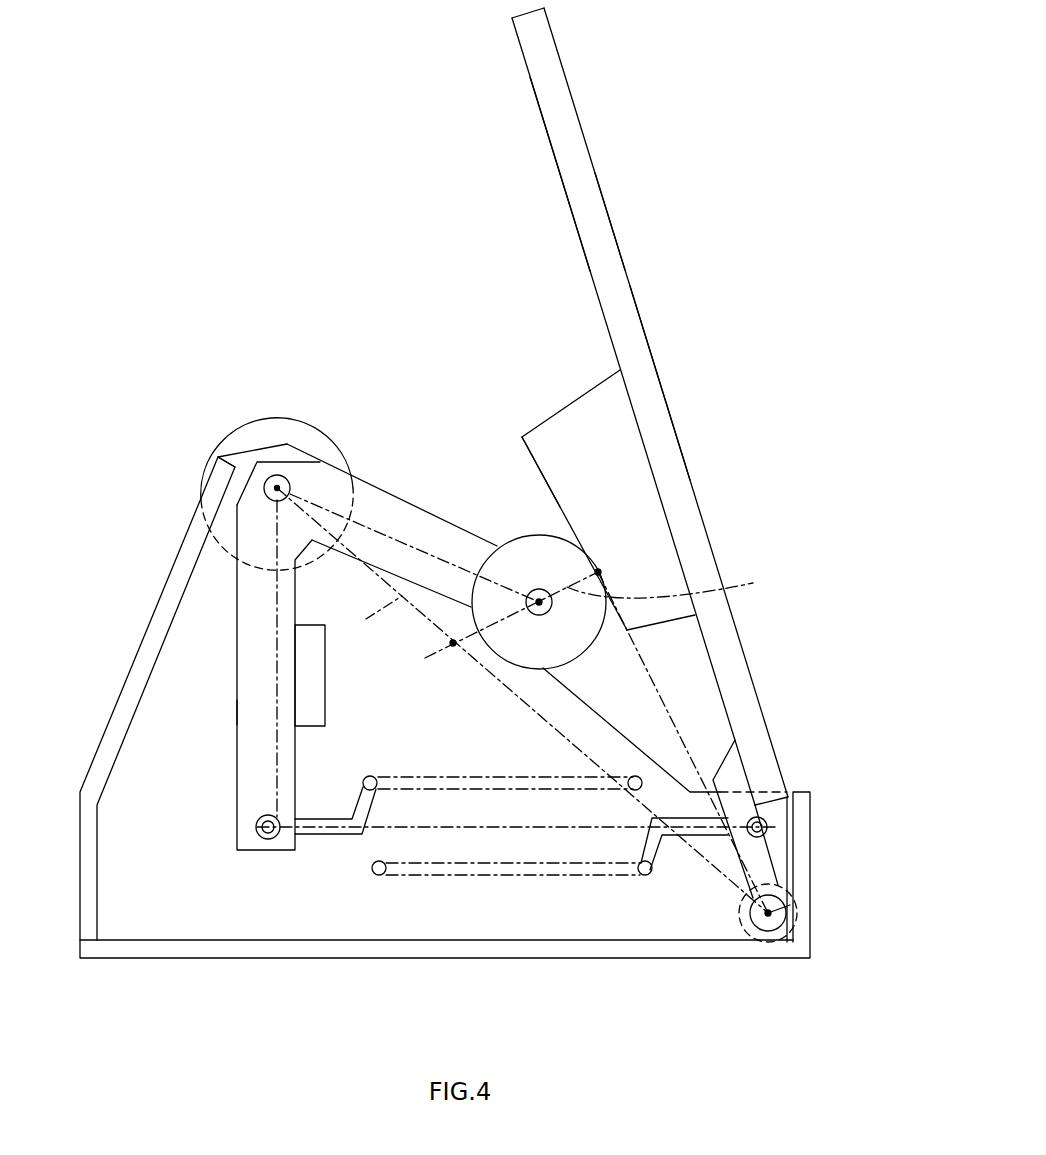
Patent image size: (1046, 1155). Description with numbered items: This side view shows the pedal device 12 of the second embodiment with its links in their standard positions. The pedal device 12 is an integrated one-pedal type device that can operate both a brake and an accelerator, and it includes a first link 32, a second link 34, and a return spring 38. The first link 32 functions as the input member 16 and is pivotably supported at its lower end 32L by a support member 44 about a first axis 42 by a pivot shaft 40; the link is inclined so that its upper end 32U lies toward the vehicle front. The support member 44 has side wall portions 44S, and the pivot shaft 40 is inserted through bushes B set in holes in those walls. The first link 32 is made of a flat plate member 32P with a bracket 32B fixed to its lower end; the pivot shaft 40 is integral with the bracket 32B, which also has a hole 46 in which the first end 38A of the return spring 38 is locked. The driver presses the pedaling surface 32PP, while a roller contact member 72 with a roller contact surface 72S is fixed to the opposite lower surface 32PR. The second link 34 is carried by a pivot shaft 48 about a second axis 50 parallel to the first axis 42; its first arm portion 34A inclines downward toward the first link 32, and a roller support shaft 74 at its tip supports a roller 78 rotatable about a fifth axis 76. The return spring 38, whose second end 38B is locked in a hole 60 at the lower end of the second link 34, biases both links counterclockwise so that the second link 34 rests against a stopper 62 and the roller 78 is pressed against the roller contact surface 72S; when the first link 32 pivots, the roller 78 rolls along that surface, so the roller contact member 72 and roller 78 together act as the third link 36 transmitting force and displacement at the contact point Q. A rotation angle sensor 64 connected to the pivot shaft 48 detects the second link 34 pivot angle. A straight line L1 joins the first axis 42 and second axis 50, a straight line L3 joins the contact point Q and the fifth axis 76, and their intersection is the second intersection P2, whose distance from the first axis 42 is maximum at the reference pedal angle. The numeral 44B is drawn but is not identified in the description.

The pedal device 12 is at (256, 128).
The input member 16 is at (688, 385).
The first link 32 is at (620, 117).
The other end of first link 32U is at (542, 40).
The one end of first link 32L is at (763, 745).
The plate member 32P is at (548, 105).
The lower surface 32PR is at (571, 206).
The pedaling surface 32PP is at (607, 199).
The bracket 32B is at (778, 857).
The second link 34 is at (231, 597).
The first arm portion 34A is at (436, 512).
The third link 36 is at (592, 532).
The return spring 38 is at (379, 876).
The first end of return spring 38A is at (753, 834).
The second end of return spring 38B is at (266, 840).
The pivot shaft 40 is at (762, 926).
The first axis 42 is at (776, 928).
The support member 44 is at (118, 712).
The frame bottom portion 44B is at (245, 712).
The side wall portion 44S is at (185, 935).
The hole 46 is at (768, 818).
The pivot shaft 48 is at (213, 463).
The second axis 50 is at (279, 477).
The hole 60 is at (257, 818).
The stopper 62 is at (328, 698).
The rotation angle sensor 64 is at (242, 418).
The roller contact member 72 is at (578, 398).
The roller contact surface 72S is at (522, 437).
The roller support shaft 74 is at (537, 588).
The fifth axis 76 is at (548, 608).
The roller 78 is at (515, 653).
The bush B is at (798, 912).
The contact point Q is at (598, 572).
The second intersection P2 is at (451, 650).
The straight line L1 is at (414, 574).
The straight line L3 is at (678, 585).